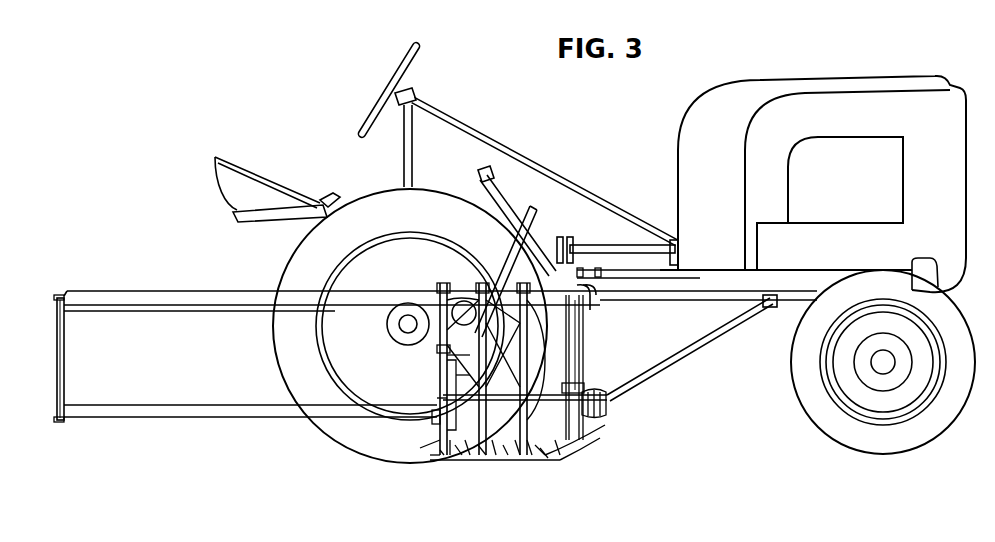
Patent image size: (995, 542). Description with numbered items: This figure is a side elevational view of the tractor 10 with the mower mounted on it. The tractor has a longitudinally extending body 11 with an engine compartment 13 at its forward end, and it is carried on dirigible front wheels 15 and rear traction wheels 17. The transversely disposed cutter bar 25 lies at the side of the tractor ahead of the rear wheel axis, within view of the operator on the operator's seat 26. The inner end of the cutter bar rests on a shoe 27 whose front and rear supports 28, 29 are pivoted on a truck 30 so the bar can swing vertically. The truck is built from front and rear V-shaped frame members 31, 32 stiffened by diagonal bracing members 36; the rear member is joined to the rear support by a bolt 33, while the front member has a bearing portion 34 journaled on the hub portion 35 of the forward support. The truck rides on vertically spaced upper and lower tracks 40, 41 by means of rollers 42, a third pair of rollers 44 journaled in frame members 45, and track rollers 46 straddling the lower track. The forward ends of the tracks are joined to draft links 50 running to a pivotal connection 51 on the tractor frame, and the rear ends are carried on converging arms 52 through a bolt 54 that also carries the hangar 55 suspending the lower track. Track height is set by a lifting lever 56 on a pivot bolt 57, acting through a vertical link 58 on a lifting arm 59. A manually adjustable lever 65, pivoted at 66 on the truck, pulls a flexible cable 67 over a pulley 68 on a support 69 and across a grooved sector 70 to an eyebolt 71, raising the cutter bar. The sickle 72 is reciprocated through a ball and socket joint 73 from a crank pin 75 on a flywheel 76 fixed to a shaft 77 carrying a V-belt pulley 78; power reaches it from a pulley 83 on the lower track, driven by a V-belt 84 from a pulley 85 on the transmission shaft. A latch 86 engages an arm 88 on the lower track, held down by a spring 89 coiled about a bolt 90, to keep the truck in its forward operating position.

The tractor 10 is at (914, 60).
The body 11 is at (648, 190).
The engine compartment 13 is at (808, 258).
The front wheel 15 is at (966, 370).
The rear traction wheel 17 is at (326, 428).
The cutter bar 25 is at (462, 458).
The operator's seat 26 is at (230, 185).
The shoe 27 is at (570, 455).
The front support 28 is at (530, 458).
The rear support 29 is at (440, 455).
The truck 30 is at (431, 392).
The front V-shaped frame member 31 is at (527, 348).
The rear V-shaped frame member 32 is at (438, 362).
The bolt 33 is at (440, 440).
The bearing portion 34 is at (540, 455).
The hub portion 35 is at (560, 470).
The diagonal bracing member 36 is at (490, 348).
The upper track 40 is at (300, 291).
The lower track 41 is at (180, 405).
The roller 42 is at (438, 290).
The roller 44 is at (472, 295).
The frame member 45 is at (518, 290).
The track roller 46 is at (434, 418).
The draft link 50 is at (688, 345).
The pivotal connection 51 is at (770, 308).
The converging arm 52 is at (162, 291).
The bolt 54 is at (56, 296).
The hangar 55 is at (64, 353).
The lifting lever 56 is at (505, 210).
The pivot bolt 57 is at (586, 253).
The vertical link 58 is at (583, 300).
The lifting arm 59 is at (605, 425).
The manually adjustable lever 65 is at (533, 225).
The pivot 66 is at (466, 313).
The flexible cable 67 is at (456, 375).
The pulley 68 is at (440, 300).
The support 69 is at (447, 355).
The grooved sector 70 is at (470, 457).
The eyebolt 71 is at (452, 455).
The sickle 72 is at (498, 457).
The ball and socket joint 73 is at (484, 458).
The crank pin 75 is at (445, 455).
The flywheel 76 is at (510, 458).
The shaft 77 is at (520, 457).
The V-belt pulley 78 is at (565, 460).
The pulley 83 is at (596, 440).
The V-belt 84 is at (570, 332).
The pulley 85 is at (572, 240).
The latch 86 is at (610, 396).
The arm 88 is at (607, 403).
The spring 89 is at (584, 388).
The bolt 90 is at (583, 365).